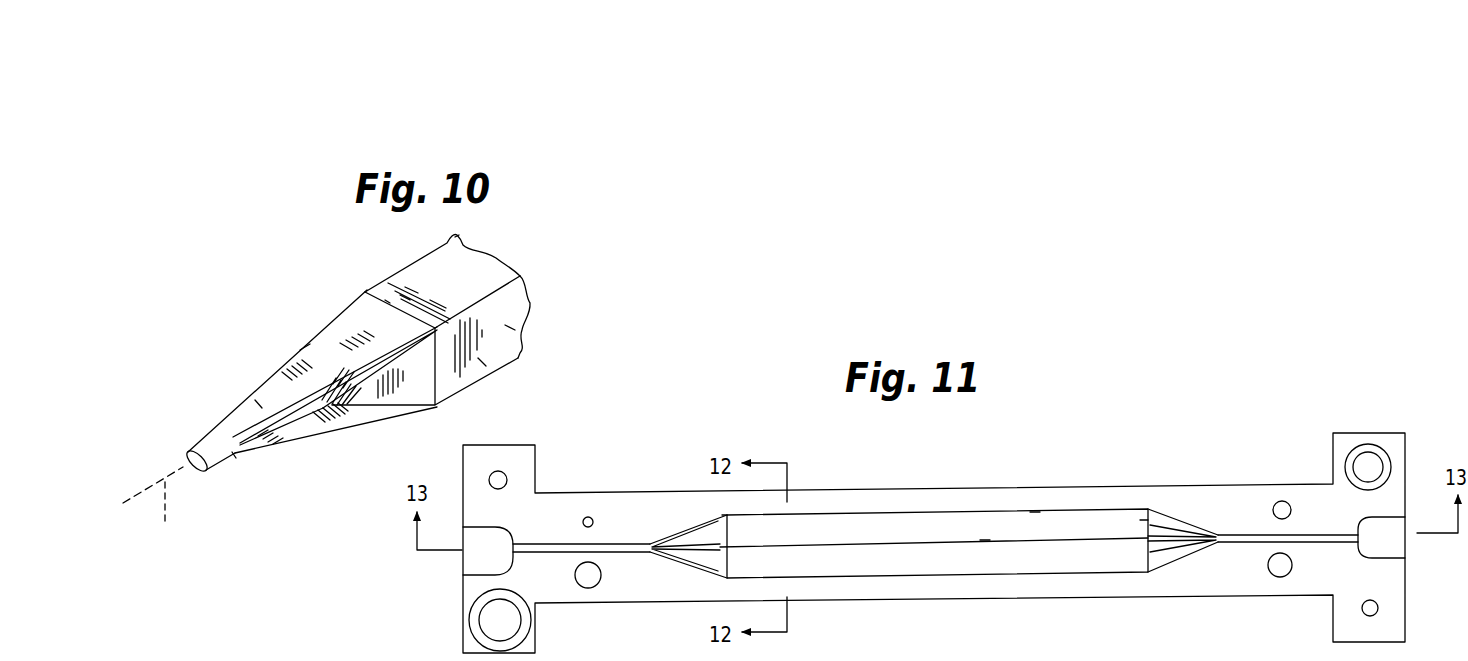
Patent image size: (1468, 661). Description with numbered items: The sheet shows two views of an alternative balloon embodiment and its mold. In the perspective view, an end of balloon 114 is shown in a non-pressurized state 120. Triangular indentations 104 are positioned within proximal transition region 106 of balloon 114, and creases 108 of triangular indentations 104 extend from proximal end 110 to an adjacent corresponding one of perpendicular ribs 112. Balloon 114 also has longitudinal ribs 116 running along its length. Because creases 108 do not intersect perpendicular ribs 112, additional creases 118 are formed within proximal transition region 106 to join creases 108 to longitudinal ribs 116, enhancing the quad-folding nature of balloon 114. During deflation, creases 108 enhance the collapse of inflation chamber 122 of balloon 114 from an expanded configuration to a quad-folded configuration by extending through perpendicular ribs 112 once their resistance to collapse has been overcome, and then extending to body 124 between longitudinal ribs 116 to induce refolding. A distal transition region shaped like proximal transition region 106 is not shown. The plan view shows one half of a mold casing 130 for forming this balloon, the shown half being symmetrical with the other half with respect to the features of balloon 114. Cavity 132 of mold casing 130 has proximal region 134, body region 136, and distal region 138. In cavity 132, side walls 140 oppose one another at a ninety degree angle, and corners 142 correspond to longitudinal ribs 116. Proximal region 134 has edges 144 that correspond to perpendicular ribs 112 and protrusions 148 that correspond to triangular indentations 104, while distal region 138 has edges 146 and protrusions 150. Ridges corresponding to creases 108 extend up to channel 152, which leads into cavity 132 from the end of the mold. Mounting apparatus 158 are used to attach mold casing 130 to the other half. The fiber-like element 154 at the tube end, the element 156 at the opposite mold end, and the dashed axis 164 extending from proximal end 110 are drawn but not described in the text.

In FIG. 10, the triangular indentations 104 is at (290, 376).
In FIG. 10, the proximal transition region 106 is at (306, 344).
In FIG. 10, the creases 108 is at (257, 406).
In FIG. 10, the proximal end 110 is at (236, 455).
In FIG. 10, the perpendicular ribs 112 is at (388, 301).
In FIG. 10, the balloon 114 is at (347, 282).
In FIG. 10, the longitudinal ribs 116 is at (463, 243).
In FIG. 10, the creases 118 is at (383, 347).
In FIG. 10, the non-pressurized state 120 is at (352, 430).
In FIG. 10, the inflation chamber 122 is at (510, 332).
In FIG. 10, the body 124 is at (478, 367).
In FIG. 11, the mold casing 130 is at (1032, 408).
In FIG. 11, the cavity 132 is at (826, 530).
In FIG. 11, the proximal region 134 is at (660, 525).
In FIG. 11, the body region 136 is at (984, 530).
In FIG. 11, the distal region 138 is at (1165, 507).
In FIG. 11, the side walls 140 is at (886, 528).
In FIG. 11, the corners 142 is at (1035, 510).
In FIG. 11, the edges 144 is at (716, 513).
In FIG. 11, the edges 146 is at (1137, 522).
In FIG. 11, the protrusions 148 is at (702, 522).
In FIG. 11, the protrusions 150 is at (1180, 530).
In FIG. 11, the channel 152 is at (645, 550).
In FIG. 10, the tube 154 is at (210, 445).
In FIG. 11, the output fiber cable 156 is at (1240, 545).
In FIG. 11, the mounting apparatus 158 is at (585, 517).
In FIG. 10, the axis line 164 is at (163, 502).